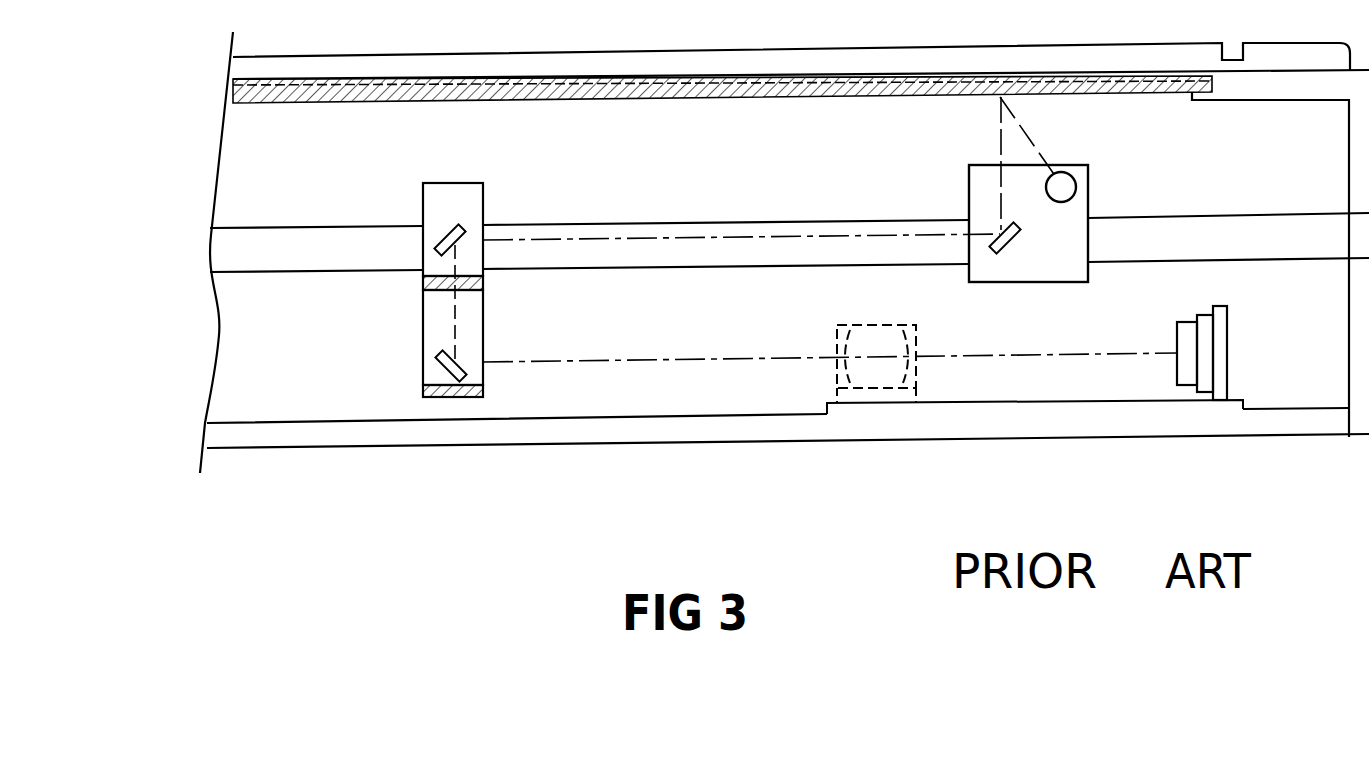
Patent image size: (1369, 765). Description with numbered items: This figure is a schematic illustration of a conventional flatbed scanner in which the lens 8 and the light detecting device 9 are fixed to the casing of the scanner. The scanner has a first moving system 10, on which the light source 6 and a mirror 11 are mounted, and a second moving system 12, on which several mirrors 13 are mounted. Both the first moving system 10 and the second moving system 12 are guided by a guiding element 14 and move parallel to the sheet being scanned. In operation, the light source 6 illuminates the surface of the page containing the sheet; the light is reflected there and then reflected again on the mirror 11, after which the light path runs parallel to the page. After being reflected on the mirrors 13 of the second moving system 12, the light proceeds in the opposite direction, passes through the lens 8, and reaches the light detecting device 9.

The light source 6 is at (1076, 185).
The lens 8 is at (872, 378).
The light detecting device 9 is at (1220, 357).
The first moving system 10 is at (987, 197).
The mirror 11 is at (1008, 248).
The second moving system 12 is at (428, 345).
The mirrors 13 is at (445, 233).
The guiding element 14 is at (248, 255).